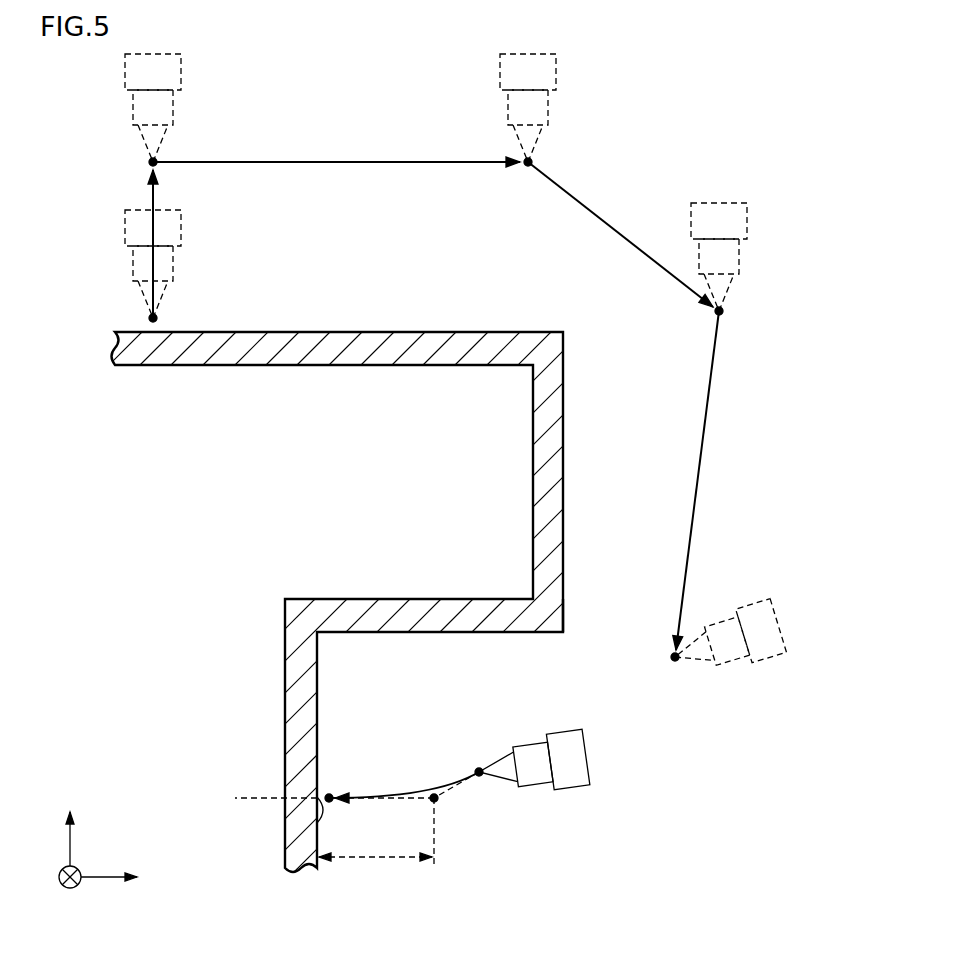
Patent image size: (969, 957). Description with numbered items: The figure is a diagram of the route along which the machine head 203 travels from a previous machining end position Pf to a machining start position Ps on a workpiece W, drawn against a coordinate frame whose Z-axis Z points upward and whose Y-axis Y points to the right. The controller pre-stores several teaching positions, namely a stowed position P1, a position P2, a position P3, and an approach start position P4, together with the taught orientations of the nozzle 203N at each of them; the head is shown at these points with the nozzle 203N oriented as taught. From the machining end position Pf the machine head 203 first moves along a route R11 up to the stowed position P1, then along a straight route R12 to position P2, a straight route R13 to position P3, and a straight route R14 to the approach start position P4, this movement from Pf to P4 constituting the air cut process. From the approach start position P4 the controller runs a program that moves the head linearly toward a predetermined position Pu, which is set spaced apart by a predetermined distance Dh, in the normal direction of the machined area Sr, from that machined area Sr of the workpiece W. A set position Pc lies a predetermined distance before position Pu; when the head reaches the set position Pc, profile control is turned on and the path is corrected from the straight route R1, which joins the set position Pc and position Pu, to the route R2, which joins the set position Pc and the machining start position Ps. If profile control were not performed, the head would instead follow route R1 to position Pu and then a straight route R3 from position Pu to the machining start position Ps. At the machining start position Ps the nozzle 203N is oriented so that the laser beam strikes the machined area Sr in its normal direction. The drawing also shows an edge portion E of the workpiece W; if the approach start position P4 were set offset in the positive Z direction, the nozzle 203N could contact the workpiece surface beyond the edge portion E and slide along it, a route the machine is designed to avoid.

The machine head 203 is at (182, 68).
The nozzle 203N is at (160, 140).
The workpiece W is at (365, 320).
The edge portion E is at (566, 632).
The machined area Sr is at (318, 822).
The stowed position P1 is at (148, 162).
The position P2 is at (533, 160).
The position P3 is at (724, 312).
The approach start position P4 is at (670, 657).
The machining end position Pf is at (150, 318).
The machining start position Ps is at (331, 795).
The position Pu is at (433, 800).
The set position Pc is at (479, 768).
The route R11 is at (150, 197).
The route R12 is at (347, 158).
The route R13 is at (611, 230).
The route R14 is at (705, 447).
The route R1 is at (456, 790).
The route R2 is at (430, 786).
The route R3 is at (381, 800).
The predetermined distance Dh is at (376, 842).
The Z-axis Z is at (70, 838).
The Y-axis Y is at (118, 877).